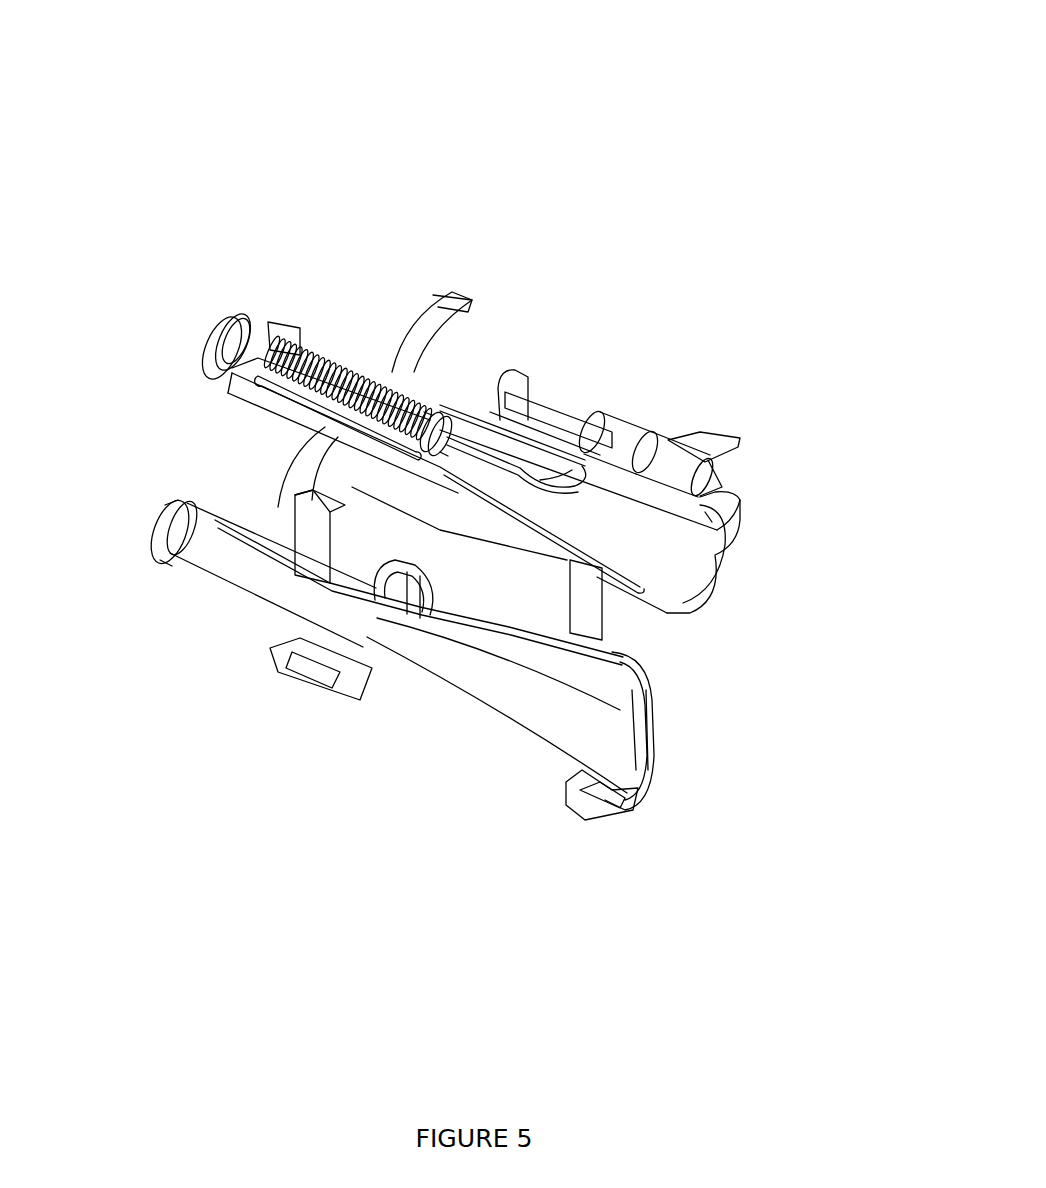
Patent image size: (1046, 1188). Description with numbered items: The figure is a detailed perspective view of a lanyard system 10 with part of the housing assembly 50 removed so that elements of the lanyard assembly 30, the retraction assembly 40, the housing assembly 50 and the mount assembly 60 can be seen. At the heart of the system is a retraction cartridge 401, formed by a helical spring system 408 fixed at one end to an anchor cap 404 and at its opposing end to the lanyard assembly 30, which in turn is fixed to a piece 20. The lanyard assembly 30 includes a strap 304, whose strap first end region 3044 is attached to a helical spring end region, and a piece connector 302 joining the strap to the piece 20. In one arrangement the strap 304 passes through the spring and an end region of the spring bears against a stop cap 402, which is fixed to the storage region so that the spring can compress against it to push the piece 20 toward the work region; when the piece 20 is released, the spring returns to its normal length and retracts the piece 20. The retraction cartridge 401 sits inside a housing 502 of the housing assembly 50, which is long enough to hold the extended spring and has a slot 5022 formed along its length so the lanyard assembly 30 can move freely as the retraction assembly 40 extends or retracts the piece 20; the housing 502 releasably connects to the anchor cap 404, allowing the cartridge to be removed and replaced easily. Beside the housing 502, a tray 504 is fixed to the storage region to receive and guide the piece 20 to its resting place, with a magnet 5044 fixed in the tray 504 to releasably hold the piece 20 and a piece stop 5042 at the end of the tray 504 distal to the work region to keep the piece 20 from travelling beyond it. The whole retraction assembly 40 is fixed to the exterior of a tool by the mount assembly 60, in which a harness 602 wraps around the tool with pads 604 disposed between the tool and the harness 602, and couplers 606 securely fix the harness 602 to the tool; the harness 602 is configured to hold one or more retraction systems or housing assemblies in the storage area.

The lanyard system 10 is at (815, 461).
The piece 20 is at (636, 455).
The lanyard assembly 30 is at (562, 283).
The piece connector 302 is at (601, 435).
The strap 304 is at (503, 462).
The strap first end region 3044 is at (558, 478).
The retraction assembly 40 is at (263, 237).
The retraction cartridge 401 is at (357, 348).
The stop cap 402 is at (427, 415).
The anchor cap 404 is at (243, 342).
The helical spring system 408 is at (348, 228).
The housing assembly 50 is at (262, 589).
The housing 502 is at (594, 543).
The tray 504 is at (712, 522).
The slot 5022 is at (640, 755).
The piece stop 5042 is at (400, 585).
The magnet 5044 is at (420, 600).
The mount assembly 60 is at (260, 489).
The harness 602 is at (297, 472).
The pads 604 is at (322, 537).
The couplers 606 is at (287, 683).